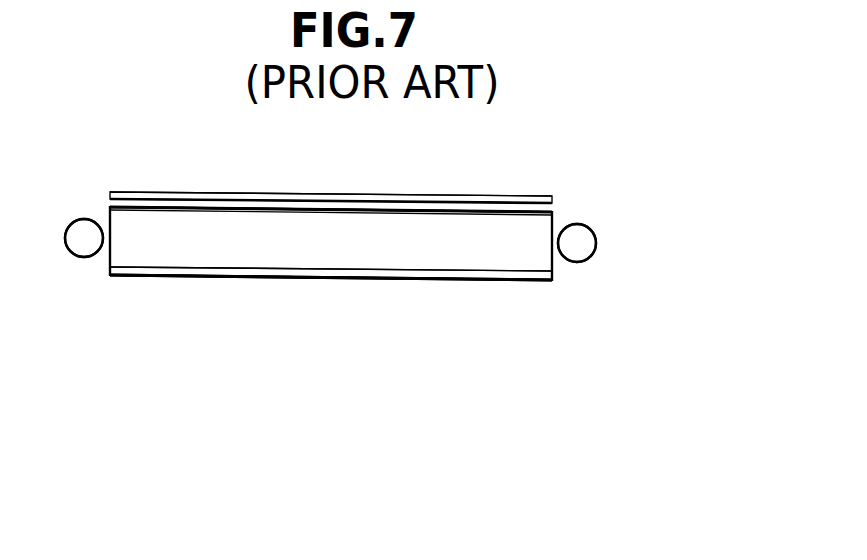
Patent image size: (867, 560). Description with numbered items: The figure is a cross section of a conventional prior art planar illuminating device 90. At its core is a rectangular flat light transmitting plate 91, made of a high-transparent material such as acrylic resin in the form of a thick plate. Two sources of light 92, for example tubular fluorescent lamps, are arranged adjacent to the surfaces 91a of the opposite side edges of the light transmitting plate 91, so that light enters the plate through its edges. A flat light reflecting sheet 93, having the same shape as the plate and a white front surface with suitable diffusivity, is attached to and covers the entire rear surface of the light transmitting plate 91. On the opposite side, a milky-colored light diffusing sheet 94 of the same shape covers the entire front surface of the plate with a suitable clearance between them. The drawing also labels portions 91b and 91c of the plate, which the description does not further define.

The planar illuminating device 90 is at (572, 146).
The light transmitting plate 91 is at (445, 258).
The surfaces of opposite side edges 91a is at (554, 263).
The liquid crystal layer 91b is at (312, 268).
The upper substrate 91c is at (388, 218).
The sources of light 92 is at (583, 235).
The light reflecting sheet 93 is at (203, 268).
The light diffusing sheet 94 is at (303, 197).